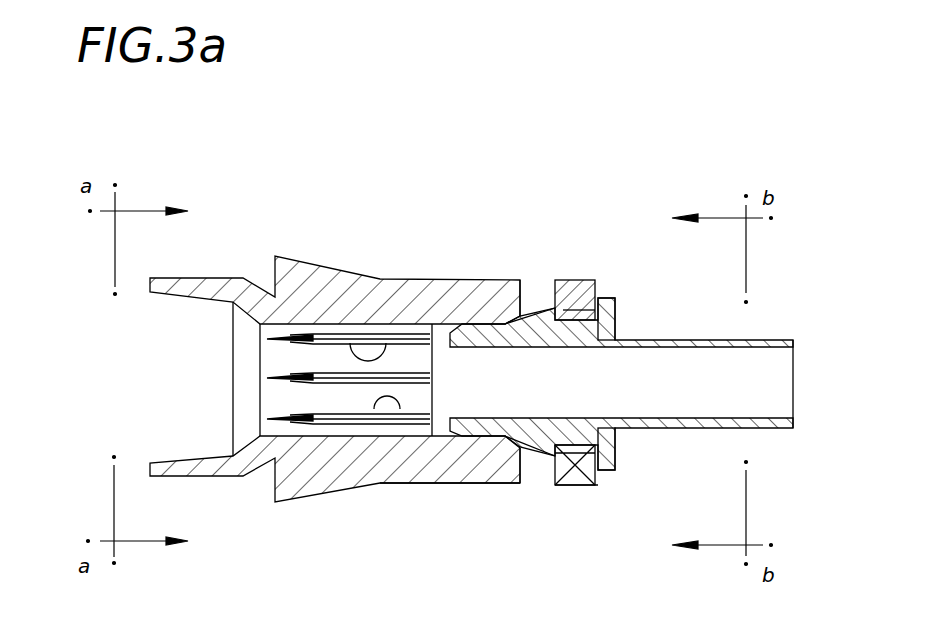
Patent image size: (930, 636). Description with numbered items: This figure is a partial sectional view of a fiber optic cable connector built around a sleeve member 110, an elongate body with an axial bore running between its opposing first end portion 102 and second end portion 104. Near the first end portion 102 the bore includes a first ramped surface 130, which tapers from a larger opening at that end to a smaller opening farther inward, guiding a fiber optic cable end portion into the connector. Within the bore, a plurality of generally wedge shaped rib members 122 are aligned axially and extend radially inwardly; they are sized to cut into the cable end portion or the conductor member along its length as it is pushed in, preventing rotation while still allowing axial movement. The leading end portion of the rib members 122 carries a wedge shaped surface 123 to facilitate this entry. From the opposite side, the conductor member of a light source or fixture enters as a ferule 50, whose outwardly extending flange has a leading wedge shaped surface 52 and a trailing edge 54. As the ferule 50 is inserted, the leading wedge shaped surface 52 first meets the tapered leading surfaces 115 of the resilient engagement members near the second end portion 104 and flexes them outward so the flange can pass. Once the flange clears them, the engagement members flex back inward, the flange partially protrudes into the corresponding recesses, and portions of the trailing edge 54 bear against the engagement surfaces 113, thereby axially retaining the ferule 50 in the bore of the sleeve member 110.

The first end portion 102 is at (207, 278).
The wedge shaped rib members 122 is at (352, 337).
The engagement surfaces 113 is at (545, 307).
The ferule 50 is at (624, 308).
The leading wedge shaped surface 52 is at (530, 307).
The trailing edge 54 is at (583, 281).
The first ramped surface 130 is at (233, 316).
The tapered leading surfaces 115 is at (593, 328).
The wedge shaped surface 123 is at (313, 378).
The second end portion 104 is at (590, 487).
The sleeve member 110 is at (467, 493).